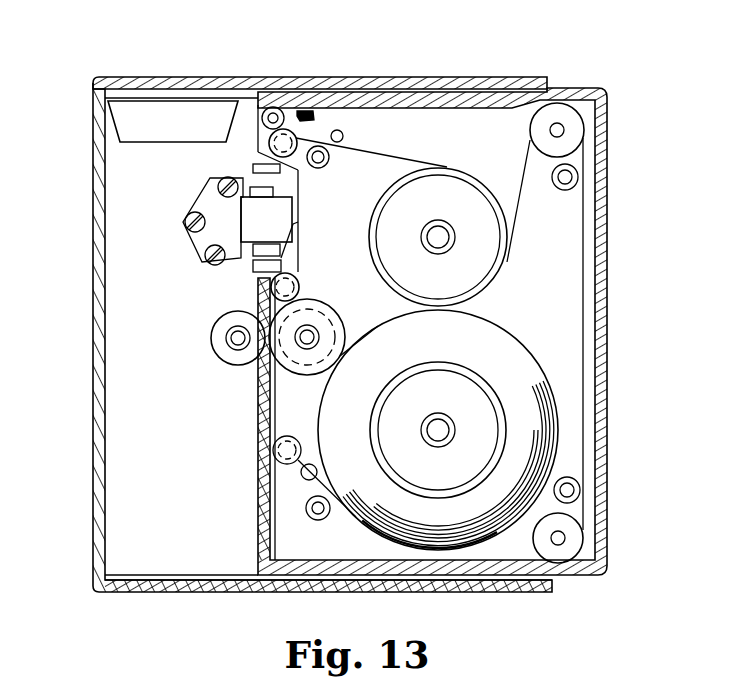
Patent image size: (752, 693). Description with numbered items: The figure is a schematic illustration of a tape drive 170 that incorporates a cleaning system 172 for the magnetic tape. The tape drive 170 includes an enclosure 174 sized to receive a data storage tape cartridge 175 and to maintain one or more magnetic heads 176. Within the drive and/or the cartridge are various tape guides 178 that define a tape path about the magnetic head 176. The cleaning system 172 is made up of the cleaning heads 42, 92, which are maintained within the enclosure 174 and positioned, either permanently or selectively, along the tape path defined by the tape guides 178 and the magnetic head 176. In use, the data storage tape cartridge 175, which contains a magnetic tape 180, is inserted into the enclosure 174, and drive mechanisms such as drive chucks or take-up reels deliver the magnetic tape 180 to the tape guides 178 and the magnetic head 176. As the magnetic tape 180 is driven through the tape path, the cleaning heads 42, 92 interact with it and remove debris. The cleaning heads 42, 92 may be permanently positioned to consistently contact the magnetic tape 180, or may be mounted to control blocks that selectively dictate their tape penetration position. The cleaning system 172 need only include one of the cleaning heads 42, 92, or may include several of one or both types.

The tape drive 170 is at (95, 284).
The enclosure 174 is at (278, 77).
The data storage tape cartridge 175 is at (608, 185).
The magnetic head 176 is at (283, 229).
The cleaning head 42 is at (256, 165).
The cleaning head 92 is at (268, 270).
The cleaning system 172 is at (233, 288).
The tape guides 178 is at (300, 132).
The magnetic tape 180 is at (393, 153).